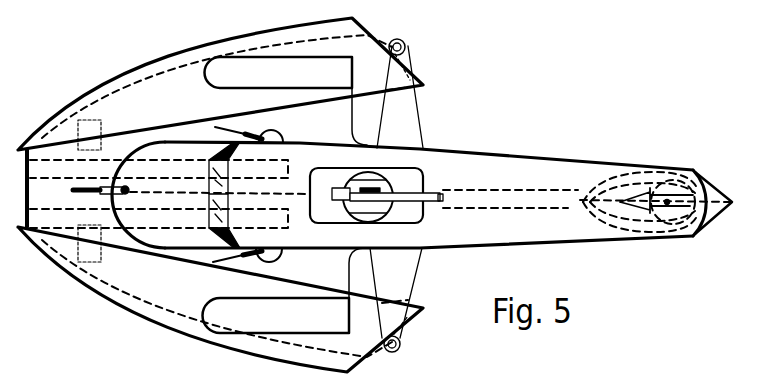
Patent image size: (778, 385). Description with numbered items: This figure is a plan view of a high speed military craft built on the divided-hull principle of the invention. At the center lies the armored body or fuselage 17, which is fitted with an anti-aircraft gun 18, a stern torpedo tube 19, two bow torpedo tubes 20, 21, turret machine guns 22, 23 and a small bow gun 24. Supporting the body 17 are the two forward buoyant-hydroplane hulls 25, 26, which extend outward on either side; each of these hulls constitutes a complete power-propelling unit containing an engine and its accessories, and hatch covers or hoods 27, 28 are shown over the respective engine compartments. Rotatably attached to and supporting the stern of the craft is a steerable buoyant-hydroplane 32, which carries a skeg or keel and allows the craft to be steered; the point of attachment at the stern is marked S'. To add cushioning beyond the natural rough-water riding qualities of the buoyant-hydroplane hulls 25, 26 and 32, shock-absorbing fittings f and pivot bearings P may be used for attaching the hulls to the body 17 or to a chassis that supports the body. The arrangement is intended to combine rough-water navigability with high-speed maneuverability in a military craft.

The armored body 17 is at (458, 162).
The anti-aircraft gun 18 is at (376, 195).
The stern torpedo tube 19 is at (497, 199).
The bow torpedo tube 20 is at (159, 166).
The bow torpedo tube 21 is at (159, 216).
The turret machine gun 22 is at (260, 127).
The turret machine gun 23 is at (259, 264).
The bow gun 24 is at (128, 193).
The forward buoyant-hydroplane hull 25 is at (220, 84).
The forward buoyant-hydroplane hull 26 is at (220, 299).
The hatch cover 27 is at (279, 72).
The hatch cover 28 is at (276, 315).
The steerable buoyant-hydroplane 32 is at (697, 180).
The pivot bearing P is at (109, 264).
The shock-absorbing fitting f is at (423, 345).
The spring S' is at (674, 212).